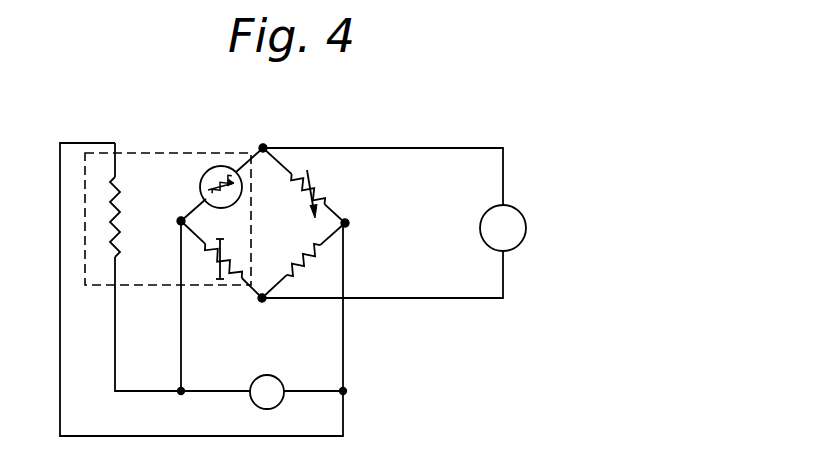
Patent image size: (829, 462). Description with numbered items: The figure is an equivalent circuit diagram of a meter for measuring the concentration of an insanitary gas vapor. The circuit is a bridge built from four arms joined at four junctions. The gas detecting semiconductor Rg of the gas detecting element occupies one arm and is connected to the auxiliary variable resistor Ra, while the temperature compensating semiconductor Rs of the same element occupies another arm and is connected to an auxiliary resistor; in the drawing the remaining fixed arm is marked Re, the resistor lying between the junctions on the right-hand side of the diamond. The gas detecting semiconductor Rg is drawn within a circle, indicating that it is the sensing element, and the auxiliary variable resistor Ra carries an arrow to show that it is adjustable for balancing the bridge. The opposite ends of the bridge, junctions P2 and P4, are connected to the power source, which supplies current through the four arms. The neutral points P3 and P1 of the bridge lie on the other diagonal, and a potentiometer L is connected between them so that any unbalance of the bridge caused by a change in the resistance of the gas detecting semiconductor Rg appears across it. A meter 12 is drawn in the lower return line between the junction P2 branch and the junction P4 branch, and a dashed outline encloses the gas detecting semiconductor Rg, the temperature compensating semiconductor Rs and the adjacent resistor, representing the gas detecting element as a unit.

The neutral point P1 is at (263, 300).
The opposite end of bridge circuit P2 is at (180, 222).
The neutral point P3 is at (262, 147).
The opposite end of bridge circuit P4 is at (349, 223).
The gas detecting semiconductor Rg is at (199, 183).
The auxiliary variable resistor Ra is at (312, 192).
The resistor Re is at (306, 262).
The temperature compensating semiconductor Rs is at (214, 262).
The potentiometer L is at (480, 228).
The meter 12 is at (256, 377).